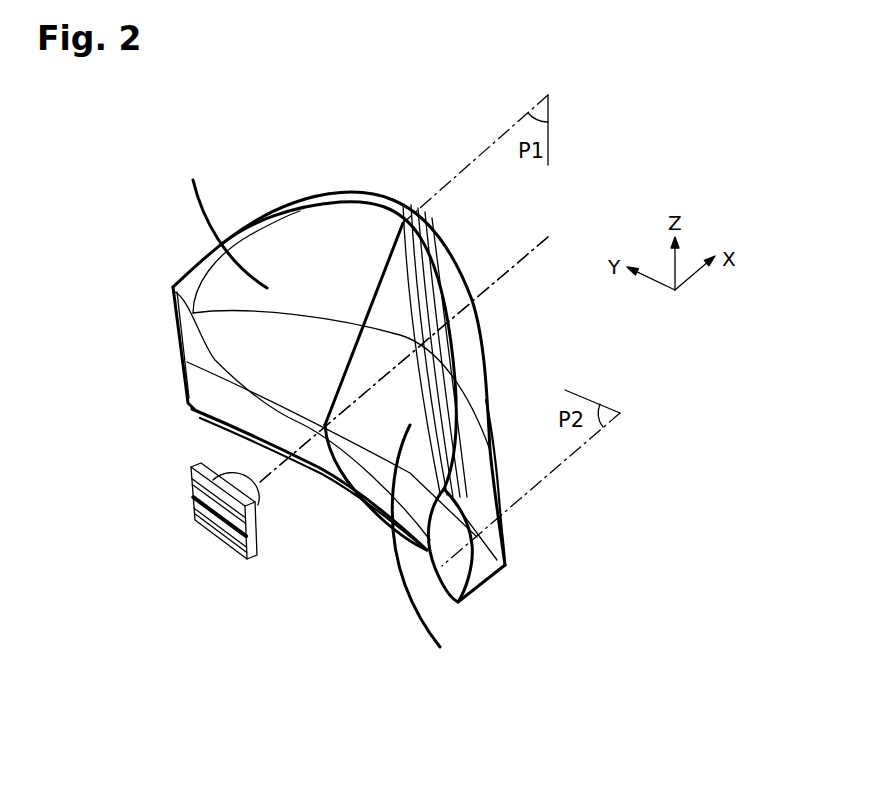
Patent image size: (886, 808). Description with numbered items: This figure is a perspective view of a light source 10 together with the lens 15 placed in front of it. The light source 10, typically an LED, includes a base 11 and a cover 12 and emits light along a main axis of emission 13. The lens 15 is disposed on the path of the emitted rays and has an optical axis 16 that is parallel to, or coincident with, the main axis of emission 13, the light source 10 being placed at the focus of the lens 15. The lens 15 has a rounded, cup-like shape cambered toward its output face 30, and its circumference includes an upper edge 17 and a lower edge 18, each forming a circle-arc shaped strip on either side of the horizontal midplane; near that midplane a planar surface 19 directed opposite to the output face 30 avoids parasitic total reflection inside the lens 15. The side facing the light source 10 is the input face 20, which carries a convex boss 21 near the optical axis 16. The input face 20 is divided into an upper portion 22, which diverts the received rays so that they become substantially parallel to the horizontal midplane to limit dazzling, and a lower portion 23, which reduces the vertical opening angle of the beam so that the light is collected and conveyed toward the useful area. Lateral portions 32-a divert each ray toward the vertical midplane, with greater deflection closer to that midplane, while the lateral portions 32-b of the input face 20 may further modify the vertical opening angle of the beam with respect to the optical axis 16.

The light source 10 is at (191, 550).
The base 11 is at (200, 507).
The cover 12 is at (263, 507).
The main axis of emission 13 is at (543, 238).
The lens 15 is at (152, 248).
The optical axis 16 is at (543, 238).
The upper edge 17 is at (347, 200).
The lower edge 18 is at (482, 580).
The planar surface 19 is at (457, 557).
The input face 20 is at (150, 366).
The boss 21 is at (383, 470).
The upper portion 22 is at (293, 255).
The lower portion 23 is at (227, 408).
The output face 30 is at (530, 388).
The lateral portion 32-a is at (503, 530).
The lateral portion of the input face 32-b is at (329, 406).